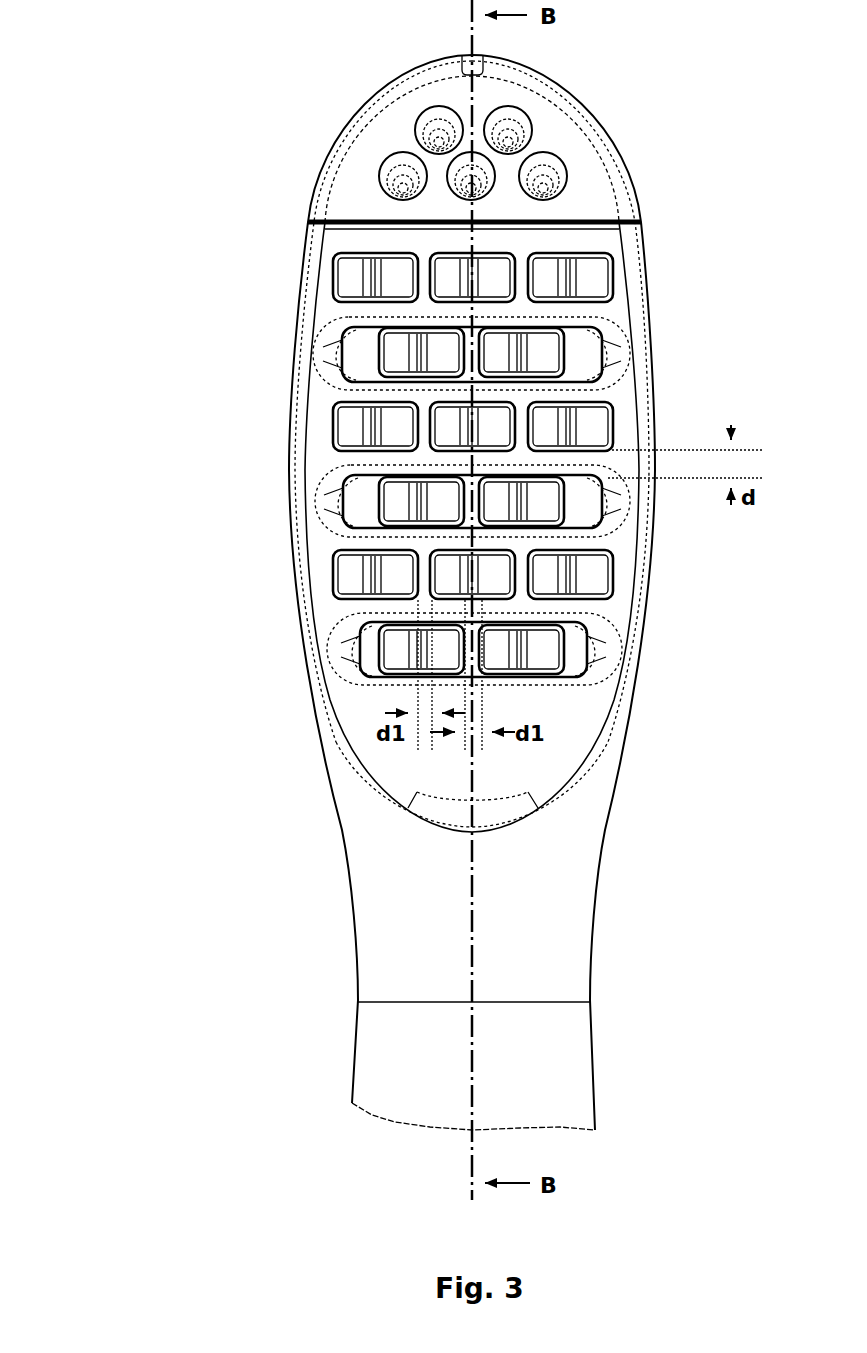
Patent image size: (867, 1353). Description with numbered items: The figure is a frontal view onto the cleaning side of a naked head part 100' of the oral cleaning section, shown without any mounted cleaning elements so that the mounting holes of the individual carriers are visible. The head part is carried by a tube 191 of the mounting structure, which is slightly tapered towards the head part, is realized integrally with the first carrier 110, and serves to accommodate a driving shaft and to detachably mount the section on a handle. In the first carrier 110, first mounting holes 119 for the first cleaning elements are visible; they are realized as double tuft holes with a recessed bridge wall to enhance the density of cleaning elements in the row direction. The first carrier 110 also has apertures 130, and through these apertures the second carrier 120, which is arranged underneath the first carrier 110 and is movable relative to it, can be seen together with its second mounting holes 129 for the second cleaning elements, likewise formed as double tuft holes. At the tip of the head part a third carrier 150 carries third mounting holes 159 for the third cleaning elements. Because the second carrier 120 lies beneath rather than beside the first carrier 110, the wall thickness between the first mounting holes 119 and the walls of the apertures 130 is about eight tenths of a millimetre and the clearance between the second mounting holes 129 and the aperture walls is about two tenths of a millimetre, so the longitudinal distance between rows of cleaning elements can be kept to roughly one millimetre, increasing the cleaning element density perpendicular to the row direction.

The naked head part 100' is at (354, 592).
The first carrier 110 is at (622, 300).
The first mounting holes 119 is at (593, 270).
The second carrier 120 is at (357, 361).
The second mounting holes 129 is at (400, 650).
The apertures 130 is at (583, 348).
The third carrier 150 is at (388, 134).
The third mounting holes 159 is at (474, 176).
The tube 191 is at (352, 1050).